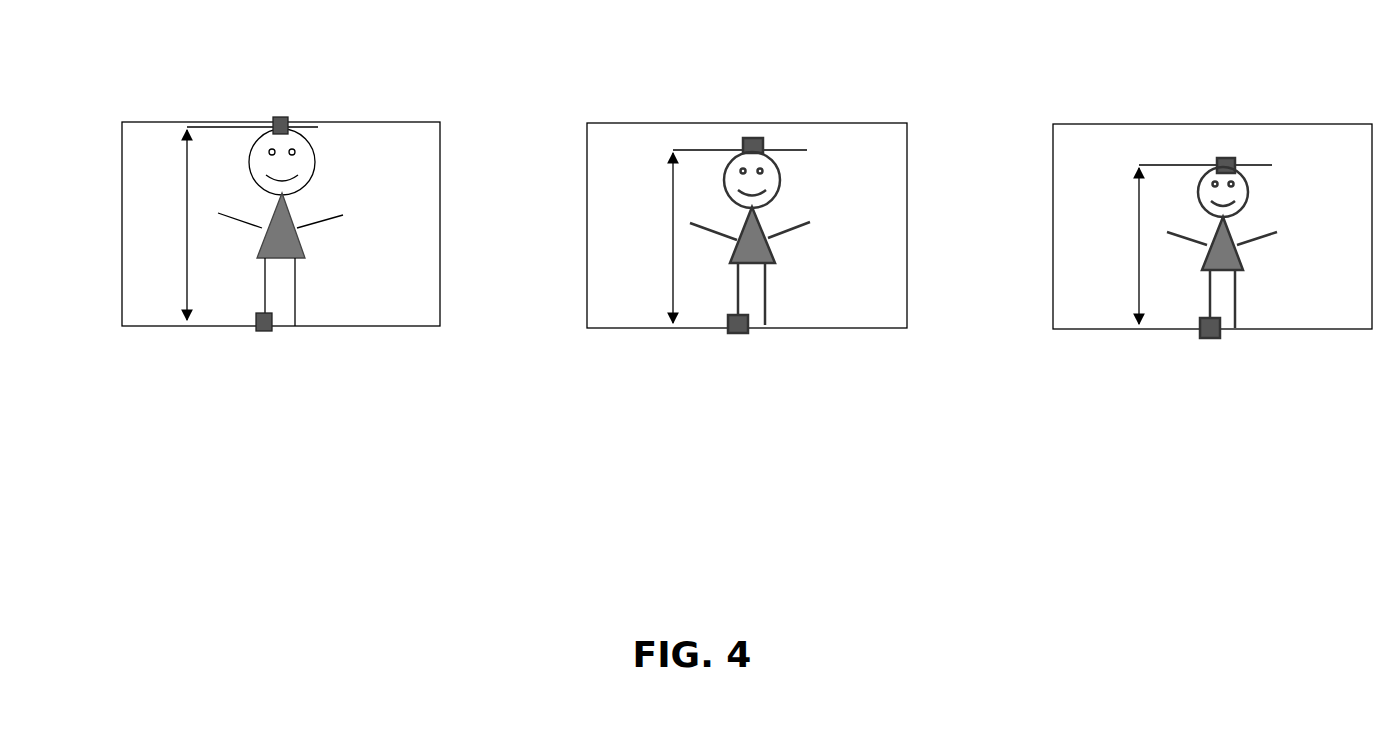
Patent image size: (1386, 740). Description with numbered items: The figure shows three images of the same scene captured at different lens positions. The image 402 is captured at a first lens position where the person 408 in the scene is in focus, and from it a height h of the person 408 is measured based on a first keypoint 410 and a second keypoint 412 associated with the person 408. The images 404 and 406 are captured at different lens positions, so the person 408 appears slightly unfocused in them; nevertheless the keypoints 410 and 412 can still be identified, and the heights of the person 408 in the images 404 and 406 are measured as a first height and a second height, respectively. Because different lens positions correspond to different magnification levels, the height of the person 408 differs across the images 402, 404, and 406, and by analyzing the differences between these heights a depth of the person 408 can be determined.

The image 402 is at (215, 355).
The image 404 is at (773, 360).
The image 406 is at (1277, 365).
The person 408 is at (311, 153).
The first keypoint 410 is at (284, 117).
The second keypoint 412 is at (273, 328).